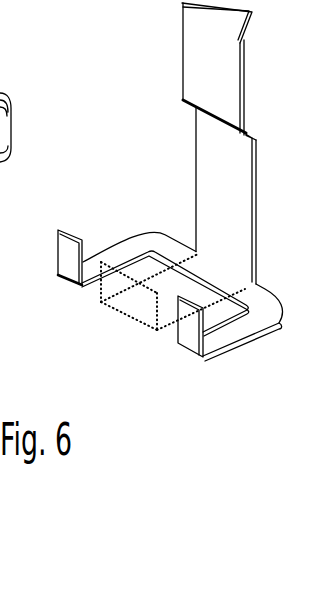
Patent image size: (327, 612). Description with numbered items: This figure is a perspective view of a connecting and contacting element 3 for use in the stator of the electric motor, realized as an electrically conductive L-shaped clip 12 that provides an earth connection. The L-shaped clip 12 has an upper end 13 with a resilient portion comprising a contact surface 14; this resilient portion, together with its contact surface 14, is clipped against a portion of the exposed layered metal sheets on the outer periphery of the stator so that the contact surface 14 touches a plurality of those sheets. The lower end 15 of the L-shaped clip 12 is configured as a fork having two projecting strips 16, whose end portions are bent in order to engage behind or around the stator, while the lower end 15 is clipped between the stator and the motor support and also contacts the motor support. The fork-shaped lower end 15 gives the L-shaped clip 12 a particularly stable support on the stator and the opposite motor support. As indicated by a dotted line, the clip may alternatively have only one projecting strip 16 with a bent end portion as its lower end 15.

The connecting and contacting element 3 is at (267, 201).
The L-shaped clip 12 is at (237, 256).
The upper end 13 is at (270, 48).
The contact surface 14 is at (196, 66).
The lower end 15 is at (253, 366).
The projecting strips 16 is at (126, 253).